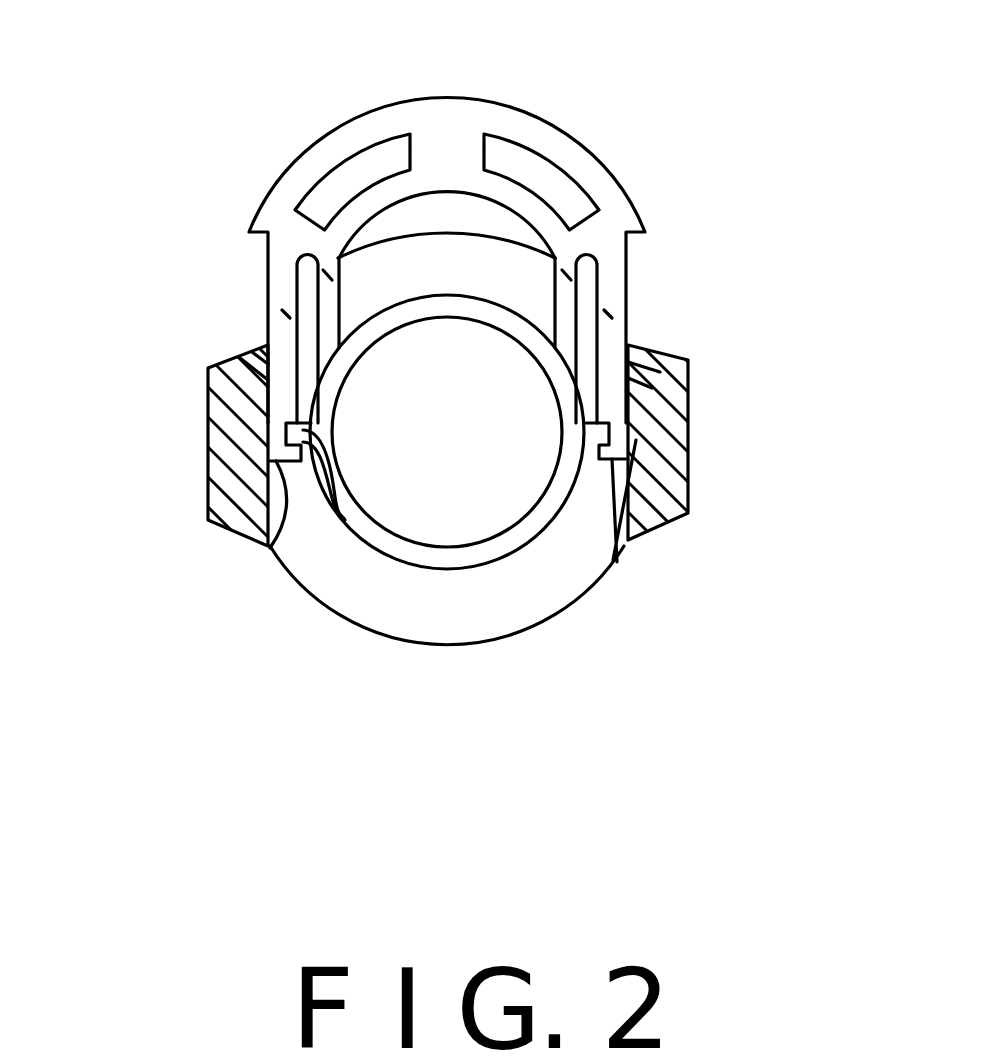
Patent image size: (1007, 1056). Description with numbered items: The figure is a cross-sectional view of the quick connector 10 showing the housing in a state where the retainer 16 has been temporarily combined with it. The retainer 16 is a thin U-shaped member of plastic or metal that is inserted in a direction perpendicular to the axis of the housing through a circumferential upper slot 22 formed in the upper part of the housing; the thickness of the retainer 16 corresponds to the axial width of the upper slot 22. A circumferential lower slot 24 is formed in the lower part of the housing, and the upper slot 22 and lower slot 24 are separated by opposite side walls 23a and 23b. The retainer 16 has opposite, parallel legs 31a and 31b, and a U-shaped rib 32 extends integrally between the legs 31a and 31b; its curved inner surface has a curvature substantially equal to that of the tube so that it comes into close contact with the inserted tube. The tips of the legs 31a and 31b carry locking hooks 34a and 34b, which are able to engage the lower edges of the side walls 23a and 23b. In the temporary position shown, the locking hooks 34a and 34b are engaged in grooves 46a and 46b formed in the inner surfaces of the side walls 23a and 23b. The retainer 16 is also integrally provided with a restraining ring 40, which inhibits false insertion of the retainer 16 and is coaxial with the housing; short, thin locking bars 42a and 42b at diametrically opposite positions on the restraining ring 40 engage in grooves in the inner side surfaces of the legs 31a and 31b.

The quick connector 10 is at (643, 160).
The retainer 16 is at (327, 142).
The upper slot 22 is at (440, 268).
The lower slot 24 is at (457, 605).
The leg 31a is at (277, 302).
The leg 31b is at (619, 303).
The U-shaped rib 32 is at (330, 300).
The locking hook 34a is at (272, 545).
The locking hook 34b is at (615, 565).
The restraining ring 40 is at (503, 547).
The locking bar 42a is at (340, 515).
The locking bar 42b is at (588, 427).
The side wall 23a is at (215, 472).
The side wall 23b is at (692, 477).
The groove 46a is at (258, 352).
The groove 46b is at (686, 359).